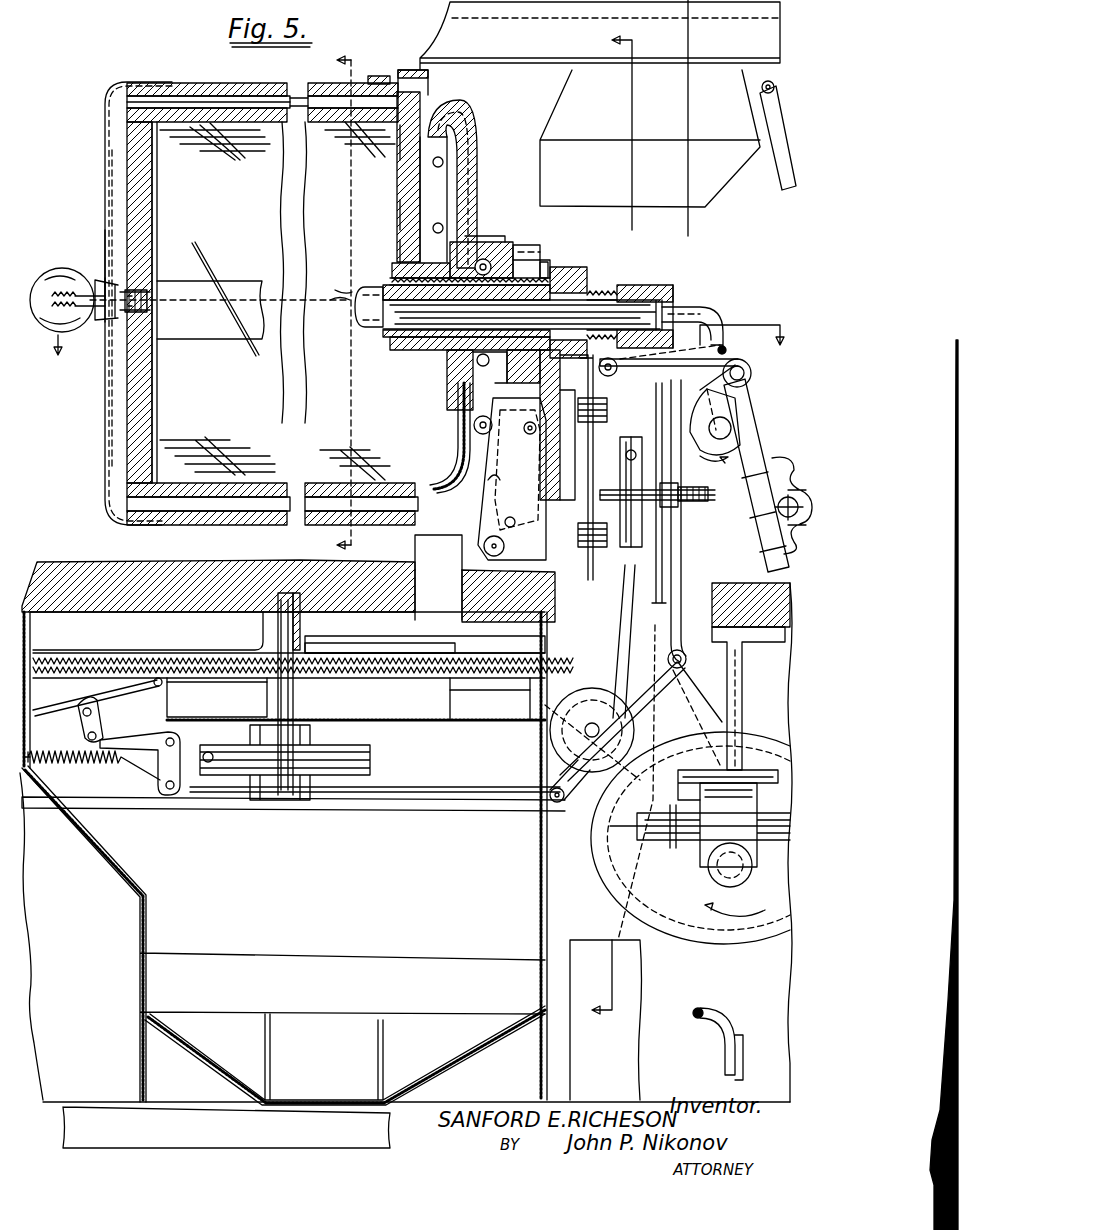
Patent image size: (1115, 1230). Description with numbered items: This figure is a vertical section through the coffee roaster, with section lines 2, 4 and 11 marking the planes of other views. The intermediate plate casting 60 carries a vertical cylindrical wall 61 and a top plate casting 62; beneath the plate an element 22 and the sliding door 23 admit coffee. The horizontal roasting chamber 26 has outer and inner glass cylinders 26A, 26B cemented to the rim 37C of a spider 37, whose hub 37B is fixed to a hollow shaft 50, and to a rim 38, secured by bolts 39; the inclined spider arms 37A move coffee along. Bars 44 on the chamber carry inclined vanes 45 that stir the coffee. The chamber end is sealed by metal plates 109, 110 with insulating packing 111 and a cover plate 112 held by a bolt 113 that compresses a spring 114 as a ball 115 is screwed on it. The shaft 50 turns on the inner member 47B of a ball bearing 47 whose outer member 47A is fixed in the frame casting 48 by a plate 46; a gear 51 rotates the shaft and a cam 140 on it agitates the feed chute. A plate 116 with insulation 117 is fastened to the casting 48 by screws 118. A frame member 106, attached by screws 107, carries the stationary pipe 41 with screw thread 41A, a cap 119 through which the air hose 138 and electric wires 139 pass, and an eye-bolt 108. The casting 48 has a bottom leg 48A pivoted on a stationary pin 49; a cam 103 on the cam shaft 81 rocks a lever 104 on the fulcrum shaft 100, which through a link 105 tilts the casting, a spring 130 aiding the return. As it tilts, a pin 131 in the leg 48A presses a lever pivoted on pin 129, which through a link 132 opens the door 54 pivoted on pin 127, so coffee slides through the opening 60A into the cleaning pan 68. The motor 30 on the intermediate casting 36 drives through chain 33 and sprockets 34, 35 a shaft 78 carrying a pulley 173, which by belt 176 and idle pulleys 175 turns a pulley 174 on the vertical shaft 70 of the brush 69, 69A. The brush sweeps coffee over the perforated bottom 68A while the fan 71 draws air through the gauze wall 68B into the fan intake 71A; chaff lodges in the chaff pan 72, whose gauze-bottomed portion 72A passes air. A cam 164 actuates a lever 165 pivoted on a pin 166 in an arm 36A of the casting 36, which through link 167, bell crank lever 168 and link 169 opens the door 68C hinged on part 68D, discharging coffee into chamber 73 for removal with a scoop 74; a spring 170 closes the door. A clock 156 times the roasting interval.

The section line 2- 2 is at (418, 318).
The section line 4- 4 is at (622, 527).
The section line 11- 11 is at (357, 306).
The hopper 22 is at (650, 118).
The sliding door 23 is at (776, 86).
The roasting chamber 26 is at (272, 300).
The outer glass cylinder 26A is at (208, 86).
The inner glass cylinder 26B is at (225, 137).
The electric motor 30 is at (690, 838).
The chain 33 is at (655, 783).
The sprocket 34 is at (655, 810).
The sprocket 35 is at (652, 502).
The intermediate casting 36 is at (742, 672).
The arm of supporting casting 36A is at (686, 659).
The spider 37 is at (397, 192).
The spider arms 37A is at (397, 208).
The hub 37B is at (397, 252).
The rim 37C is at (383, 149).
The rim 38 is at (142, 88).
The bolts 39 is at (292, 98).
The pipe 41 is at (365, 330).
The screw thread 41A is at (595, 290).
The bars 44 is at (222, 288).
The vanes 45 is at (225, 297).
The plate 46 is at (447, 385).
The ball bearing 47 is at (481, 248).
The outer bearing member 47A is at (478, 232).
The inner bearing member 47B is at (518, 246).
The frame casting 48 is at (477, 170).
The bottom leg 48A is at (485, 530).
The stationary pin 49 is at (483, 548).
The hollow shaft 50 is at (392, 282).
The gear 51 is at (548, 252).
The door 54 is at (485, 500).
The intermediate plate casting 60 is at (75, 570).
The opening 60A is at (438, 595).
The vertical cylindrical wall 61 is at (414, 556).
The top plate casting 62 is at (418, 33).
The cleaning pan 68 is at (540, 638).
The perforated bottom 68A is at (408, 681).
The wire gauze wall portion 68B is at (32, 618).
The door portion 68C is at (42, 712).
The hinge part 68D is at (158, 686).
The brush 69 is at (392, 652).
The bar 69A is at (460, 652).
The vertical shaft 70 is at (278, 627).
The fan 71 is at (698, 861).
The fan intake 71A is at (566, 797).
The chaff pan 72 is at (270, 700).
The gauze-bottomed portion 72A is at (490, 699).
The chamber 73 is at (406, 957).
The scoop 74 is at (268, 1040).
The shaft 78 is at (705, 505).
The cam shaft 81 is at (735, 422).
The fulcrum shaft 100 is at (790, 488).
The cam 103 is at (745, 405).
The lever 104 is at (760, 442).
The link 105 is at (668, 370).
The frame member 106 is at (587, 270).
The screws 107 is at (566, 465).
The eye-bolt 108 is at (610, 380).
The metal plate 109 is at (158, 178).
The metal plate 110 is at (120, 178).
The insulating packing 111 is at (150, 212).
The plate 112 is at (104, 222).
The bolt 113 is at (100, 330).
The spring 114 is at (150, 335).
The ball 115 is at (80, 268).
The plate 116 is at (455, 211).
The insulation 117 is at (455, 186).
The screws 118 is at (432, 199).
The cap 119 is at (634, 286).
The pin 127 is at (456, 422).
The stationary pin 129 is at (580, 534).
The spring 130 is at (607, 410).
The pin 131 is at (490, 489).
The link 132 is at (483, 436).
The flexible air hose 138 is at (726, 348).
The electric wires 139 is at (730, 298).
The cam 140 is at (548, 262).
The clock 156 is at (606, 1020).
The cam 164 is at (740, 395).
The lever 165 is at (682, 545).
The pin 166 is at (685, 670).
The link 167 is at (453, 805).
The bell crank lever 168 is at (168, 754).
The link 169 is at (100, 726).
The spring 170 is at (110, 778).
The pulley 173 is at (631, 482).
The pulley 174 is at (358, 752).
The idle pulleys 175 is at (605, 694).
The belt 176 is at (625, 615).